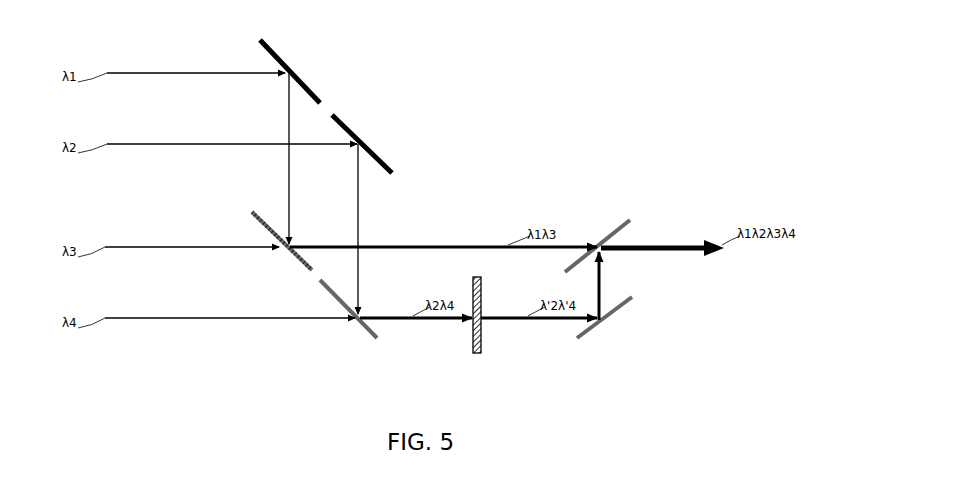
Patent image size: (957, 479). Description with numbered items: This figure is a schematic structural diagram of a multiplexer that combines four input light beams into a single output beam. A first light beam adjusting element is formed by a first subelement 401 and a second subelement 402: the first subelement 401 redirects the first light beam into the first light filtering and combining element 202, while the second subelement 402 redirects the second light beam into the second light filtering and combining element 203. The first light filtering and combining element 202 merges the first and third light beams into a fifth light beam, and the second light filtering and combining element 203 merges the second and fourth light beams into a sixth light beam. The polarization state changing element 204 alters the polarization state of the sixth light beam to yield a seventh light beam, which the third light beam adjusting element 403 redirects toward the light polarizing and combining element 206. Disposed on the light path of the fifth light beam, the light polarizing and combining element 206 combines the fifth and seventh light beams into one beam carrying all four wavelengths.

The first subelement 401 is at (323, 103).
The second subelement 402 is at (394, 173).
The first light filtering and combining element 202 is at (253, 214).
The second light filtering and combining element 203 is at (321, 281).
The polarization state changing element 204 is at (482, 285).
The light polarizing and combining element 206 is at (630, 224).
The third light beam adjusting element 403 is at (632, 298).